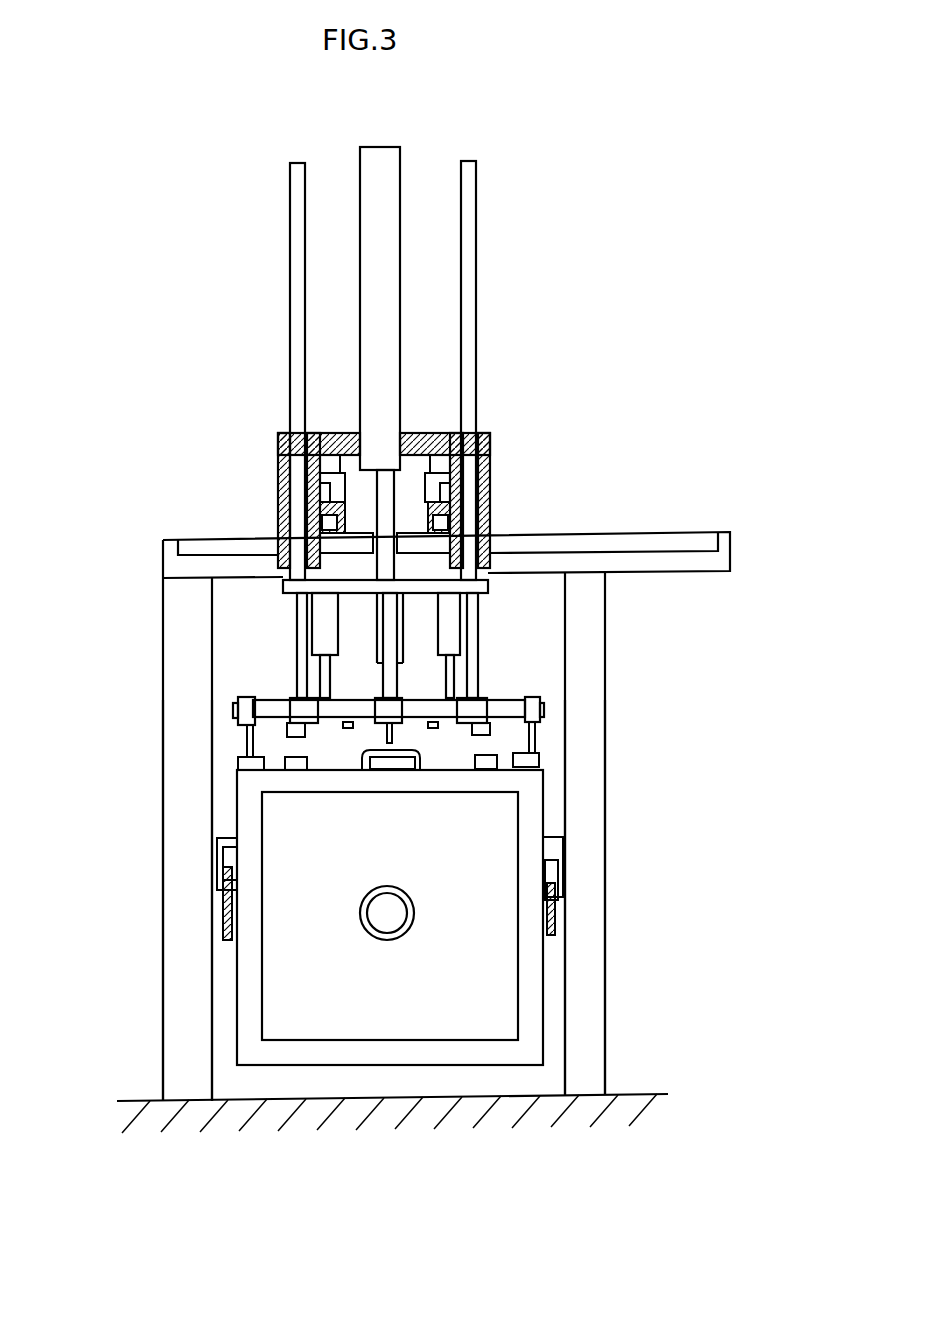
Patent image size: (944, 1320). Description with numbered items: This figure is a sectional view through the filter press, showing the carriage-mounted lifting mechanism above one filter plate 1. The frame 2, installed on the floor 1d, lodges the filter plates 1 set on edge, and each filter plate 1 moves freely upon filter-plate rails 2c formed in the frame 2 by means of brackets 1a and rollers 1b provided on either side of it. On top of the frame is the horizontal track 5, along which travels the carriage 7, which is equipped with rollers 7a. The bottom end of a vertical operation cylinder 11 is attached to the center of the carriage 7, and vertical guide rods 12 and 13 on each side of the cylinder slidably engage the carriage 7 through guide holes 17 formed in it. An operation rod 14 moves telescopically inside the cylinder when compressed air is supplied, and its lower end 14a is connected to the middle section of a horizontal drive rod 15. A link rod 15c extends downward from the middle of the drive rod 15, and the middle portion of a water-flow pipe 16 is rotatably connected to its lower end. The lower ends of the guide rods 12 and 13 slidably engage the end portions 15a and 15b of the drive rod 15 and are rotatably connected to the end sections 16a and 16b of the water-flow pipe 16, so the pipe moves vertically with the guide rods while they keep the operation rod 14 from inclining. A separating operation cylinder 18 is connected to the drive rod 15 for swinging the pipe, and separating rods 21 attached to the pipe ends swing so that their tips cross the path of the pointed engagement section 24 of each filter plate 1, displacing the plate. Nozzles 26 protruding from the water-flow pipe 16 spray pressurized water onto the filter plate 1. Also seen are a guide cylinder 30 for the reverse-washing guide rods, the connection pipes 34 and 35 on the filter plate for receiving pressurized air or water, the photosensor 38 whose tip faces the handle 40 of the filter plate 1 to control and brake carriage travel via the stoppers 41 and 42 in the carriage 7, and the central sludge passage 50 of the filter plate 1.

The filter plate 1 is at (543, 955).
The bracket 1a is at (217, 858).
The roller 1b is at (226, 882).
The floor 1d is at (668, 1094).
The frame 2 is at (168, 952).
The filter-plate rail 2c is at (230, 925).
The horizontal track 5 is at (280, 532).
The carriage 7 is at (437, 433).
The roller 7a is at (490, 452).
The vertical operation cylinder 11 is at (400, 150).
The vertical guide rod 12 is at (292, 172).
The vertical guide rod 13 is at (478, 200).
The operation rod 14 is at (396, 478).
The lower end of operation rod 14a is at (400, 578).
The horizontal drive rod 15 is at (330, 600).
The end portion of drive rod 15a is at (300, 585).
The end portion of drive rod 15b is at (488, 590).
The link rod 15c is at (460, 625).
The water-flow pipe 16 is at (542, 700).
The end section of water-flow pipe 16a is at (238, 712).
The end section of water-flow pipe 16b is at (540, 702).
The guide hole 17 is at (447, 475).
The separating operation cylinder 18 is at (350, 622).
The separating rod 21 is at (533, 740).
The pointed engagement section 24 is at (537, 762).
The nozzle 26 is at (495, 723).
The guide cylinder 30 is at (285, 600).
The connection pipe 34 is at (300, 772).
The connection pipe 35 is at (485, 770).
The photosensor 38 is at (392, 745).
The handle 40 is at (395, 757).
The stopper 41 is at (325, 433).
The stopper 42 is at (468, 440).
The sludge passage 50 is at (360, 912).